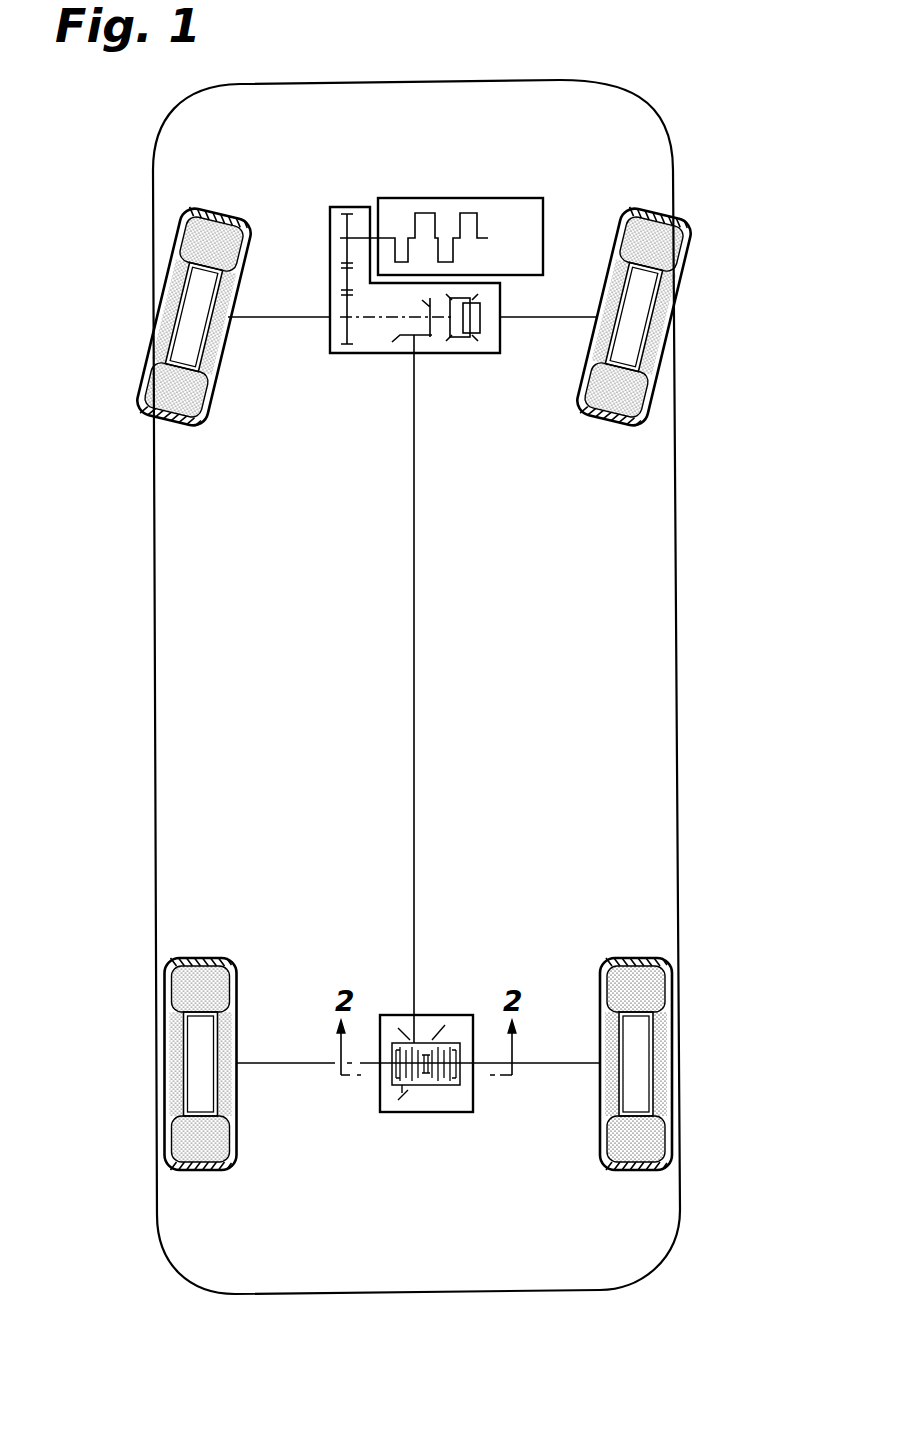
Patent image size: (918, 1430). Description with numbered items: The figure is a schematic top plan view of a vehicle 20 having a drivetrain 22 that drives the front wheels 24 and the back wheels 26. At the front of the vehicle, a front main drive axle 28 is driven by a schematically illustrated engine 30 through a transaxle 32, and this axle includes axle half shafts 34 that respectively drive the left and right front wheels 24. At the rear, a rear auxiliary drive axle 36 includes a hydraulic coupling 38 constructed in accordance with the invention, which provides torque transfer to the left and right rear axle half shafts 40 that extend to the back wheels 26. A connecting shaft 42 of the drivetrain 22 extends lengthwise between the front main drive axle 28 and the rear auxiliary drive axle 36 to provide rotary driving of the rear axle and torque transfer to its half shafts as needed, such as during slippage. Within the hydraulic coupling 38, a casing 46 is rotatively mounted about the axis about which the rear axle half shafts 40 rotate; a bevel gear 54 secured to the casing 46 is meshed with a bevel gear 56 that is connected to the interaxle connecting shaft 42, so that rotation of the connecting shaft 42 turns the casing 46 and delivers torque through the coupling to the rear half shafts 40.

The vehicle 20 is at (710, 177).
The drivetrain 22 is at (585, 208).
The front wheels 24 is at (185, 223).
The back wheels 26 is at (165, 982).
The front main drive axle 28 is at (280, 336).
The engine 30 is at (458, 186).
The transaxle 32 is at (379, 372).
The axle half shafts 34 is at (278, 315).
The rear auxiliary drive axle 36 is at (516, 1098).
The hydraulic coupling 38 is at (438, 1131).
The axle half shafts 40 is at (290, 1062).
The connecting shaft 42 is at (414, 685).
The casing 46 is at (425, 1100).
The bevel gear 54 is at (402, 1032).
The bevel gear 56 is at (434, 1032).